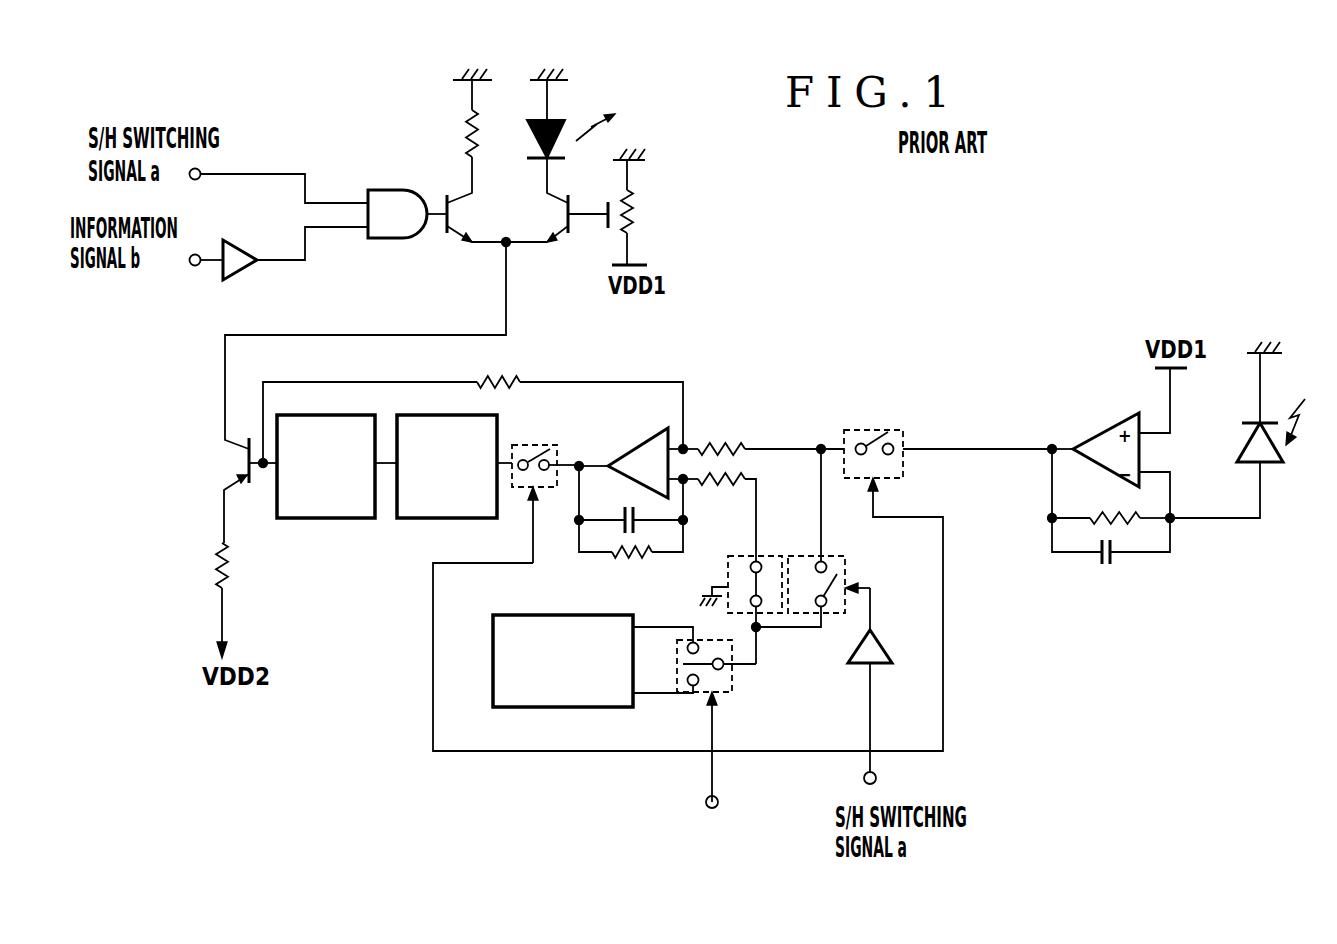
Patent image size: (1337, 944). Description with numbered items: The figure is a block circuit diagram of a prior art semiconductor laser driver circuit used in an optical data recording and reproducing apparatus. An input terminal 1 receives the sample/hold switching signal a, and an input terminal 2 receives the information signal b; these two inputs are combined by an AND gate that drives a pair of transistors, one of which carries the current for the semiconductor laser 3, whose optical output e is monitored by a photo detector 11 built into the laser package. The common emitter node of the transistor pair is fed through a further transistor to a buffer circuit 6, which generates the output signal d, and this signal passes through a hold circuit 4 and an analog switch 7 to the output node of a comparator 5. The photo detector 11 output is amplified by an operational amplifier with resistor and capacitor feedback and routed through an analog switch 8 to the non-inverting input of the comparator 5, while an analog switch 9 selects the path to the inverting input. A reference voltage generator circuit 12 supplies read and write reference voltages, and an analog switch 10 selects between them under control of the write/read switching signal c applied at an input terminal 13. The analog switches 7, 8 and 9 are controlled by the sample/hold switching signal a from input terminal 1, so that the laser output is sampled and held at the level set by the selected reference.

The input terminal 1 is at (273, 163).
The input terminal 2 is at (243, 266).
The semiconductor laser 3 is at (563, 120).
The hold circuit 4 is at (500, 428).
The comparator 5 is at (672, 431).
The buffer circuit 6 is at (305, 519).
The analog switch 7 is at (553, 446).
The analog switch 8 is at (906, 470).
The analog switch 9 is at (840, 556).
The analog switch 10 is at (733, 684).
The photo detector 11 is at (1243, 392).
The reference voltage generator circuit 12 is at (500, 678).
The input terminal 13 is at (705, 802).